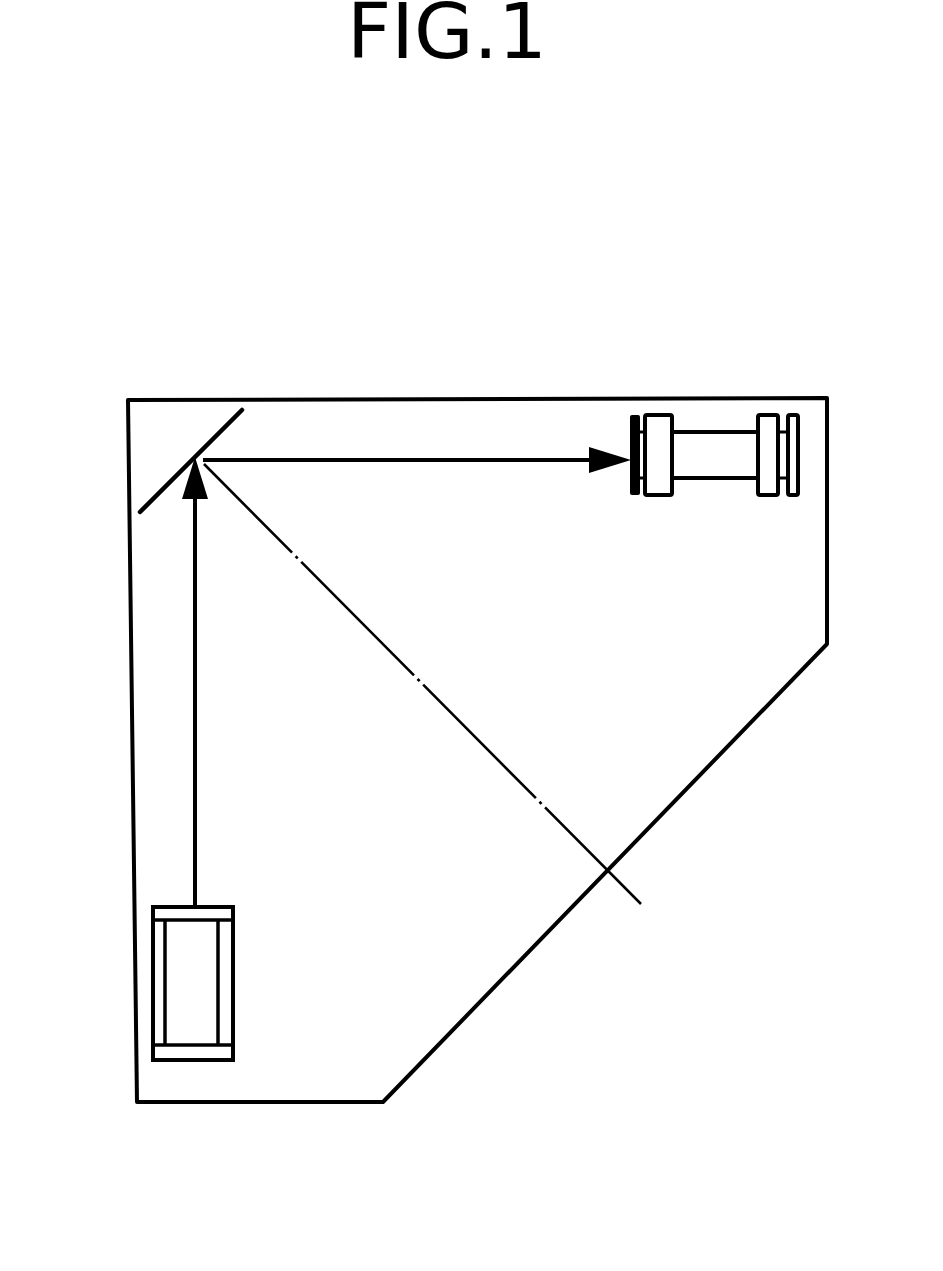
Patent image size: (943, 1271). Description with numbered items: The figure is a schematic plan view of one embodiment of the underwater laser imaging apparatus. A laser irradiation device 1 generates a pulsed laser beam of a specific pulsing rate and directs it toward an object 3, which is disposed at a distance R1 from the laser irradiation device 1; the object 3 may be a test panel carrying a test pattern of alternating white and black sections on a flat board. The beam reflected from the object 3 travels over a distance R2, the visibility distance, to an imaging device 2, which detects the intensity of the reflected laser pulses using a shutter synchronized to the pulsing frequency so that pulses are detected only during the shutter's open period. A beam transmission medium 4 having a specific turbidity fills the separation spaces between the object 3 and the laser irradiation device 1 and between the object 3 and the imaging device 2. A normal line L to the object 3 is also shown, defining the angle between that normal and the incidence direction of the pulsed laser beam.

The laser irradiation device 1 is at (155, 942).
The imaging device 2 is at (700, 432).
The object 3 is at (221, 428).
The beam transmission medium 4 is at (684, 736).
The normal line L is at (462, 734).
The distance R1 is at (212, 682).
The distance R2 is at (417, 478).